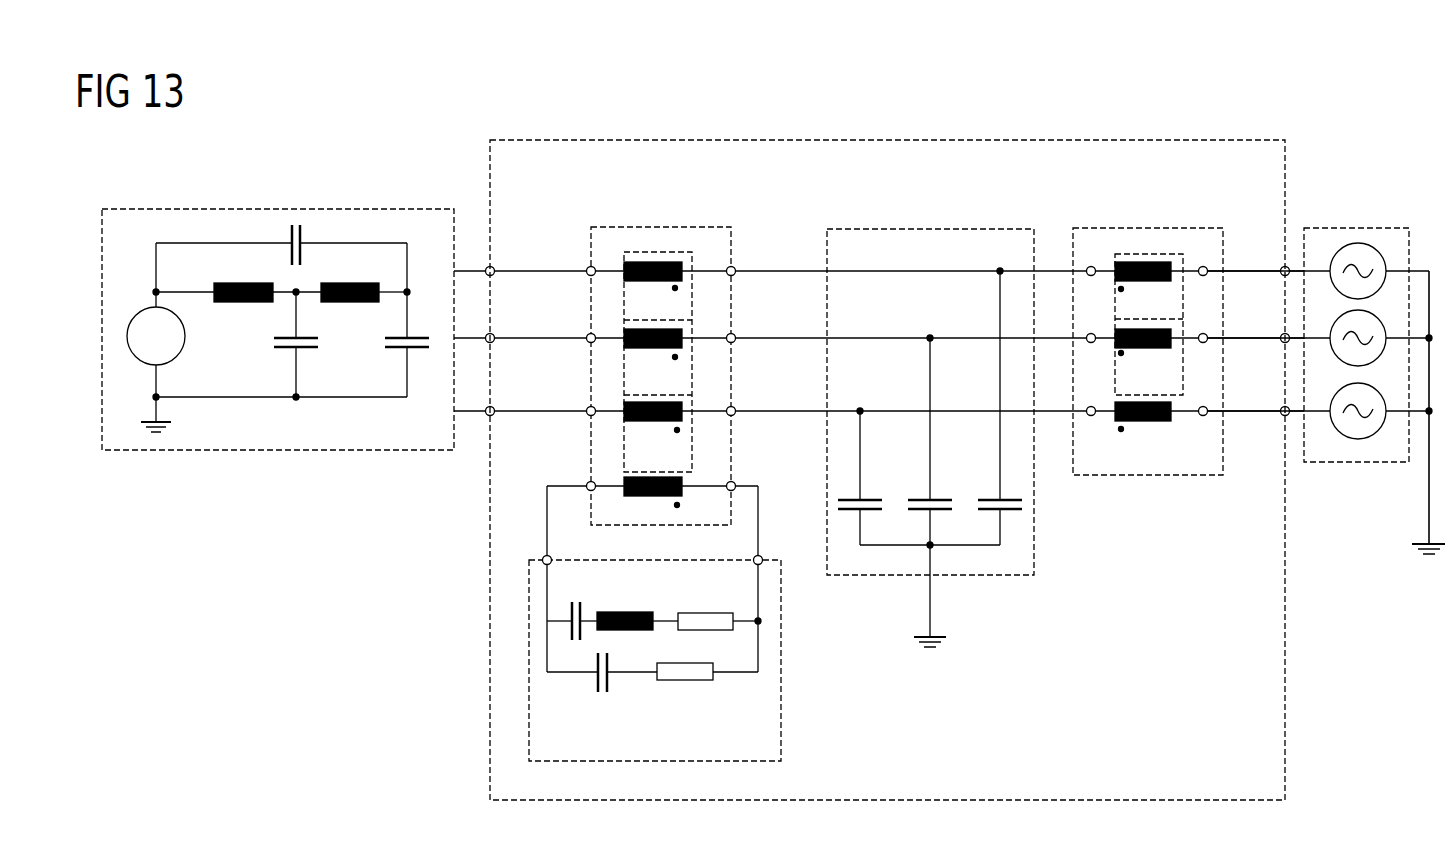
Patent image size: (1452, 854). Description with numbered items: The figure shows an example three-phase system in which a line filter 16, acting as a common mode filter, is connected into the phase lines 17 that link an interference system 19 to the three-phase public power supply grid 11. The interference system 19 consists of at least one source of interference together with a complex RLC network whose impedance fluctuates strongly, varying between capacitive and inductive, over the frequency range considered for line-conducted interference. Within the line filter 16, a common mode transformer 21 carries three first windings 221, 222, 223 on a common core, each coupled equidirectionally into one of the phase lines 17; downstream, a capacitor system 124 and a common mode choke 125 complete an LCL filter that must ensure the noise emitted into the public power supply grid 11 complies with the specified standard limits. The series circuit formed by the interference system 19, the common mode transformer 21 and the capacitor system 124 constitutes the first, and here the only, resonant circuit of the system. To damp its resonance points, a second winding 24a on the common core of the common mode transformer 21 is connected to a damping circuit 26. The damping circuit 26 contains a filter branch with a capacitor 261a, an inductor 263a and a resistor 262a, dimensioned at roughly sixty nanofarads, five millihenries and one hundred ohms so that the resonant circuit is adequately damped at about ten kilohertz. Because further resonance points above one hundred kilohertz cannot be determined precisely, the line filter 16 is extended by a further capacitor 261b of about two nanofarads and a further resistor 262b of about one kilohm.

The three-phase public power supply grid 11 is at (1330, 228).
The line filter 16 is at (490, 632).
The phase lines 17 is at (1227, 268).
The interference system 19 is at (133, 209).
The common mode transformer 21 is at (646, 342).
The first winding 221 is at (622, 263).
The first winding 222 is at (622, 330).
The first winding 223 is at (622, 404).
The second winding 24a is at (622, 478).
The damping circuit 26 is at (689, 623).
The capacitor 261a is at (585, 615).
The inductor 263a is at (655, 612).
The resistor 262a is at (733, 625).
The capacitor 261b is at (611, 692).
The resistor 262b is at (673, 681).
The capacitor system 124 is at (975, 229).
The common mode choke 125 is at (1108, 228).